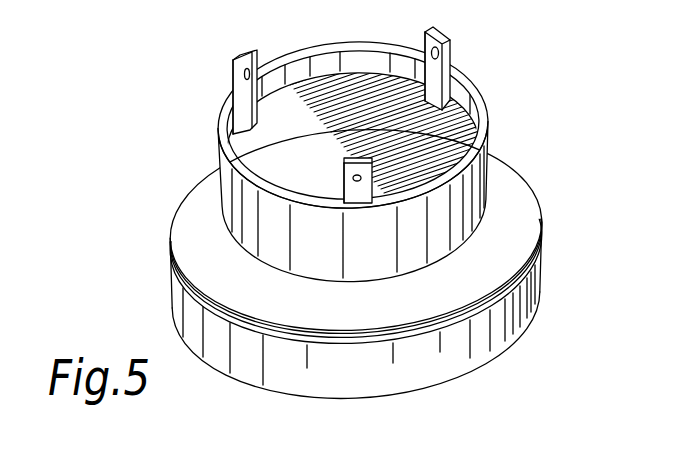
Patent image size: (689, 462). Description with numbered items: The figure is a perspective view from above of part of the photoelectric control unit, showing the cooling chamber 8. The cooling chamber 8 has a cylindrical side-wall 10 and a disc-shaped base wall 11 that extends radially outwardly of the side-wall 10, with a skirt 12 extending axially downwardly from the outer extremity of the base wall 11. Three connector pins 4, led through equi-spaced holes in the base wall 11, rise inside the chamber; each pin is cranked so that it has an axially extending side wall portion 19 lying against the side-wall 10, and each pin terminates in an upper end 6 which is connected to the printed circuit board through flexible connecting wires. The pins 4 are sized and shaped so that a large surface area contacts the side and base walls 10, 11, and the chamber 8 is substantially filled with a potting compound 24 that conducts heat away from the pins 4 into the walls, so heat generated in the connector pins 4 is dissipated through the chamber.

The connector pin 4 is at (246, 50).
The upper end 6 is at (243, 74).
The cooling chamber 8 is at (121, 233).
The cylindrical side-wall 10 is at (219, 189).
The disc-shaped base wall 11 is at (518, 233).
The skirt 12 is at (487, 342).
The side wall portion 19 is at (247, 113).
The potting compound 24 is at (447, 150).